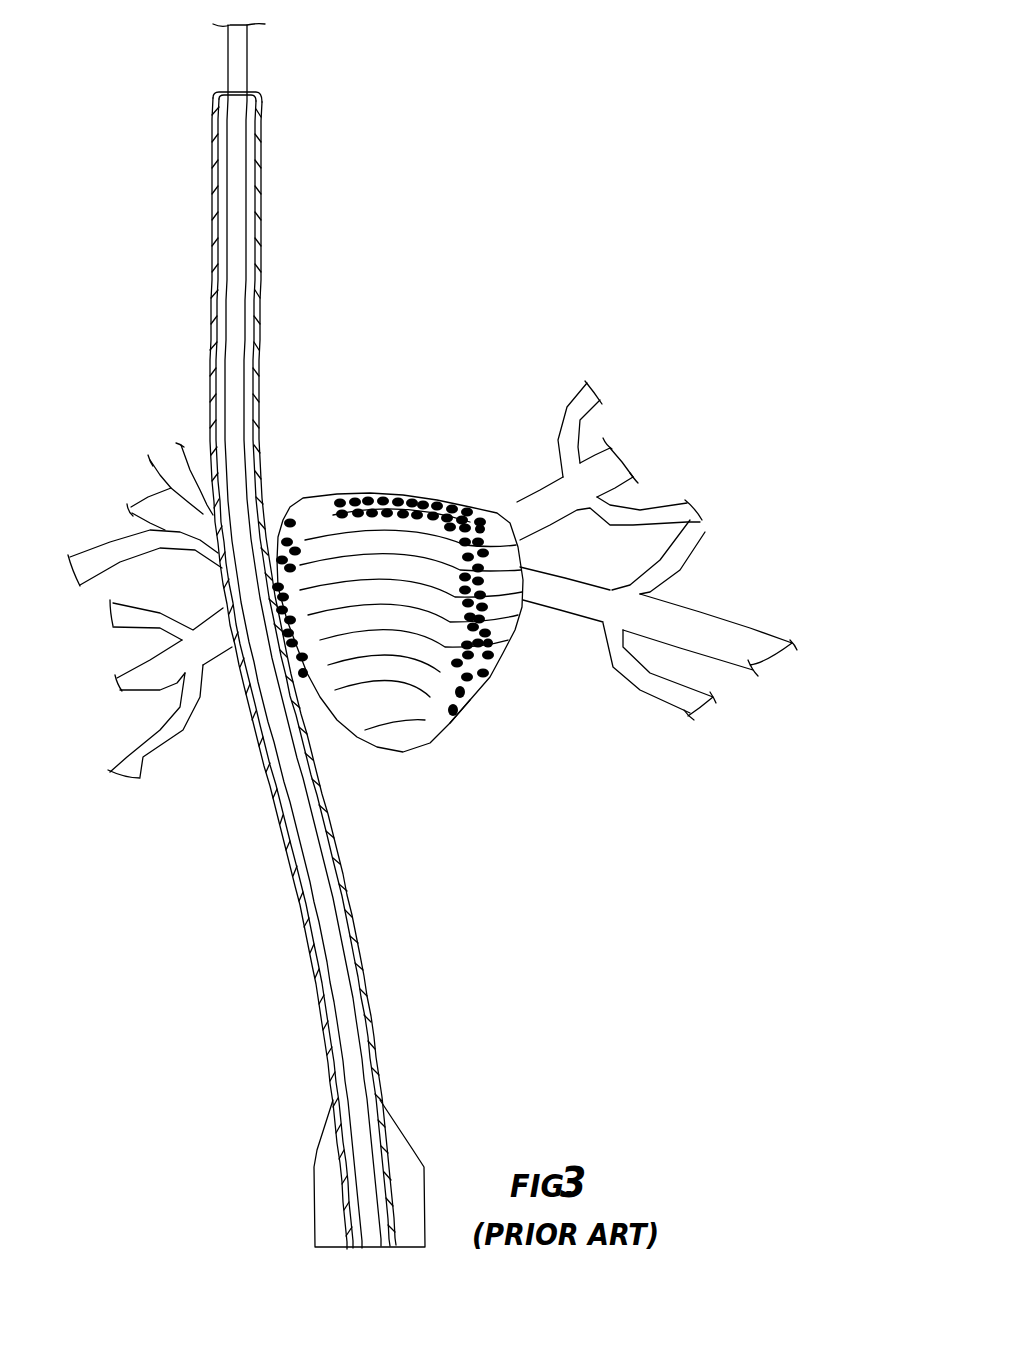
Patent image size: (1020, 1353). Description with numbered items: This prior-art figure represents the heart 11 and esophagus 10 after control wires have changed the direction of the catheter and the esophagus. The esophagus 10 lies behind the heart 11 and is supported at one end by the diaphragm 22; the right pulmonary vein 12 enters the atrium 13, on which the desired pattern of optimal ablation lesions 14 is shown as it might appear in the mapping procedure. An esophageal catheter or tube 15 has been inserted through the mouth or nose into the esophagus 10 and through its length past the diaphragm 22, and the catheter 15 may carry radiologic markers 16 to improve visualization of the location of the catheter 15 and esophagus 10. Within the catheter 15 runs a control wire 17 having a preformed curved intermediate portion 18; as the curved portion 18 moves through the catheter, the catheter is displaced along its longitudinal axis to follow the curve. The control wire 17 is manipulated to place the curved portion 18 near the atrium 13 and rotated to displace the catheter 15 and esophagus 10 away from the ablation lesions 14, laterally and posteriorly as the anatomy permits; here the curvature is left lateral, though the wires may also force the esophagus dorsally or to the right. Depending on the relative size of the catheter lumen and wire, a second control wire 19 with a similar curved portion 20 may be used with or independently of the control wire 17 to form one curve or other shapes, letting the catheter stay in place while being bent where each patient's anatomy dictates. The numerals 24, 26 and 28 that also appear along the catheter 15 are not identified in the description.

The esophagus 10 is at (272, 625).
The heart 11 is at (458, 718).
The right pulmonary vein 12 is at (533, 485).
The atrium 13 is at (432, 499).
The ablation lesions 14 is at (490, 655).
The esophageal catheter 15 is at (223, 120).
The radiologic marker 16 is at (237, 307).
The control wire 17 is at (247, 47).
The curved intermediate portion 18 is at (266, 644).
The second control wire 19 is at (228, 62).
The curved portion 20 is at (246, 526).
The diaphragm 22 is at (243, 422).
The depth marking 24 is at (240, 287).
The depth marking 26 is at (241, 192).
The depth marking 28 is at (242, 120).